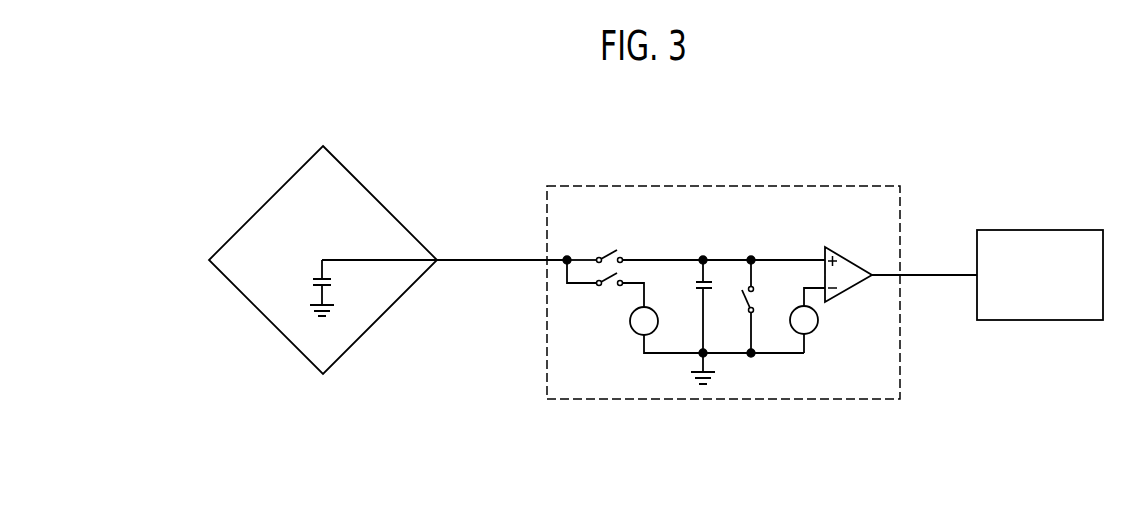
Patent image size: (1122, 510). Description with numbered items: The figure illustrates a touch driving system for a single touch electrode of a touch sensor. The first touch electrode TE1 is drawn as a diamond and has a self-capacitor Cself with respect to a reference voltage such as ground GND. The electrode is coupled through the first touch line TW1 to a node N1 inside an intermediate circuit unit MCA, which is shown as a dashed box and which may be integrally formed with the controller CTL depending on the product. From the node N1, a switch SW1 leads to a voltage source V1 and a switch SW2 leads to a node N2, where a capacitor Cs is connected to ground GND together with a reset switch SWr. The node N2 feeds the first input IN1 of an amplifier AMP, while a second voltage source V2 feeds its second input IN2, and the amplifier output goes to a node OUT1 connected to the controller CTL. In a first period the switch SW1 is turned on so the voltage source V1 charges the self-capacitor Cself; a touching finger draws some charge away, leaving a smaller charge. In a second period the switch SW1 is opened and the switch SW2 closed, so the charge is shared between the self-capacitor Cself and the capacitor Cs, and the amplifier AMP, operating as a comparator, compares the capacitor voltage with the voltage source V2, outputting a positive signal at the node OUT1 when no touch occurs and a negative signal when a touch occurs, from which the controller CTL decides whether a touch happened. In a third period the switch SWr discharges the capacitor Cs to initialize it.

The first touch electrode TE1 is at (381, 202).
The self-capacitor Cself is at (302, 288).
The first touch line TW1 is at (483, 262).
The intermediate circuit unit MCA is at (725, 186).
The node N1 is at (567, 247).
The switch SW1 is at (605, 288).
The switch SW2 is at (635, 241).
The voltage source V1 is at (666, 330).
The node N2 is at (761, 294).
The capacitor Cs is at (693, 306).
The switch SWr is at (733, 306).
The ground GND is at (721, 372).
The voltage source V2 is at (807, 320).
The node IN1 is at (788, 247).
The node IN2 is at (807, 275).
The amplifier AMP is at (847, 257).
The node OUT1 is at (924, 264).
The controller CTL is at (1035, 230).